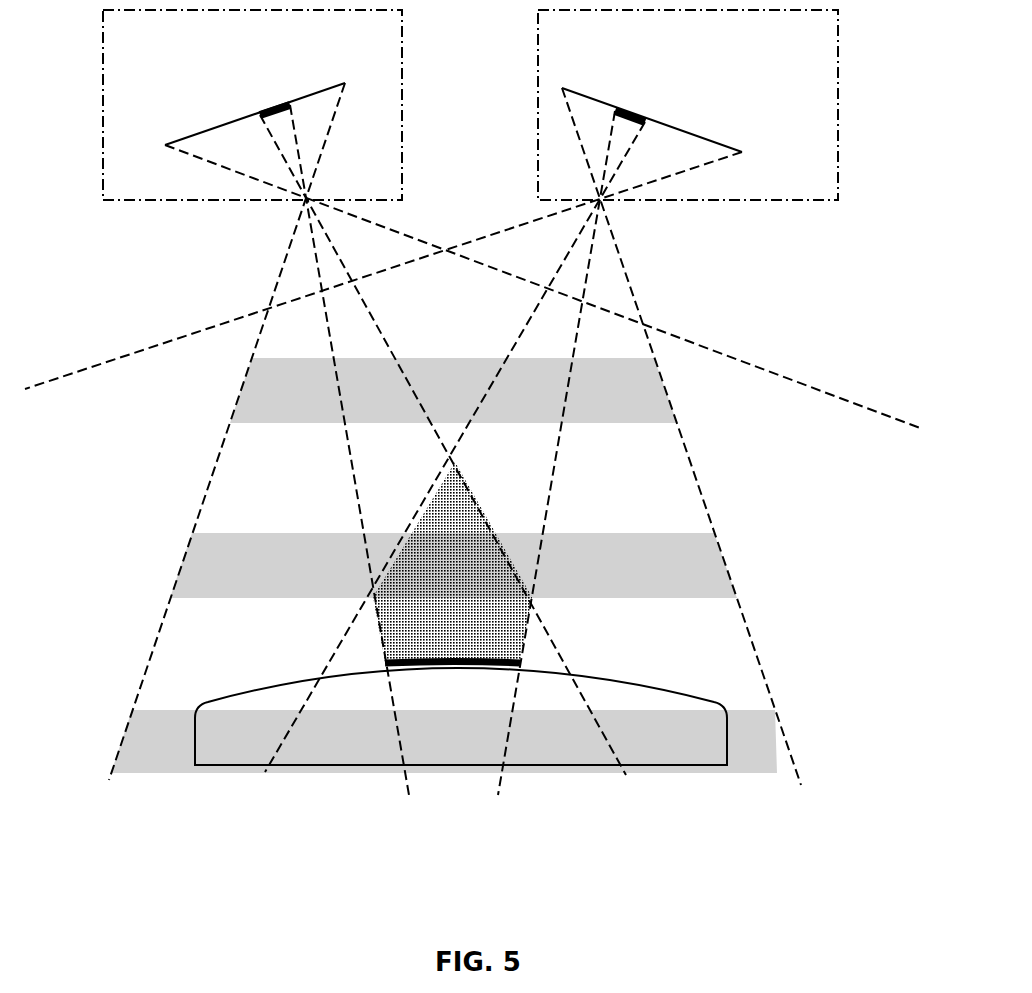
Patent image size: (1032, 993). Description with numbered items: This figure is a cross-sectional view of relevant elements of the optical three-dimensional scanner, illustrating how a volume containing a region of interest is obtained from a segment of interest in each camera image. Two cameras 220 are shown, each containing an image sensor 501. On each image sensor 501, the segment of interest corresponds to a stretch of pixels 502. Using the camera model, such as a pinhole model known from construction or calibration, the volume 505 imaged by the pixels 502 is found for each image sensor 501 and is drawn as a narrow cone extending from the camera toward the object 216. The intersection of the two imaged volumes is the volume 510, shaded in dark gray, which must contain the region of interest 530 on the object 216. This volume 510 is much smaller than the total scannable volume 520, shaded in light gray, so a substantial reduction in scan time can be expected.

The camera 220 is at (470, 105).
The image sensor 501 is at (464, 117).
The stretch of pixels 502 is at (454, 96).
The volume imaged by pixels 505 is at (452, 450).
The volume 510 is at (452, 562).
The total scannable volume 520 is at (472, 434).
The object 216 is at (461, 716).
The region of interest 530 is at (424, 677).